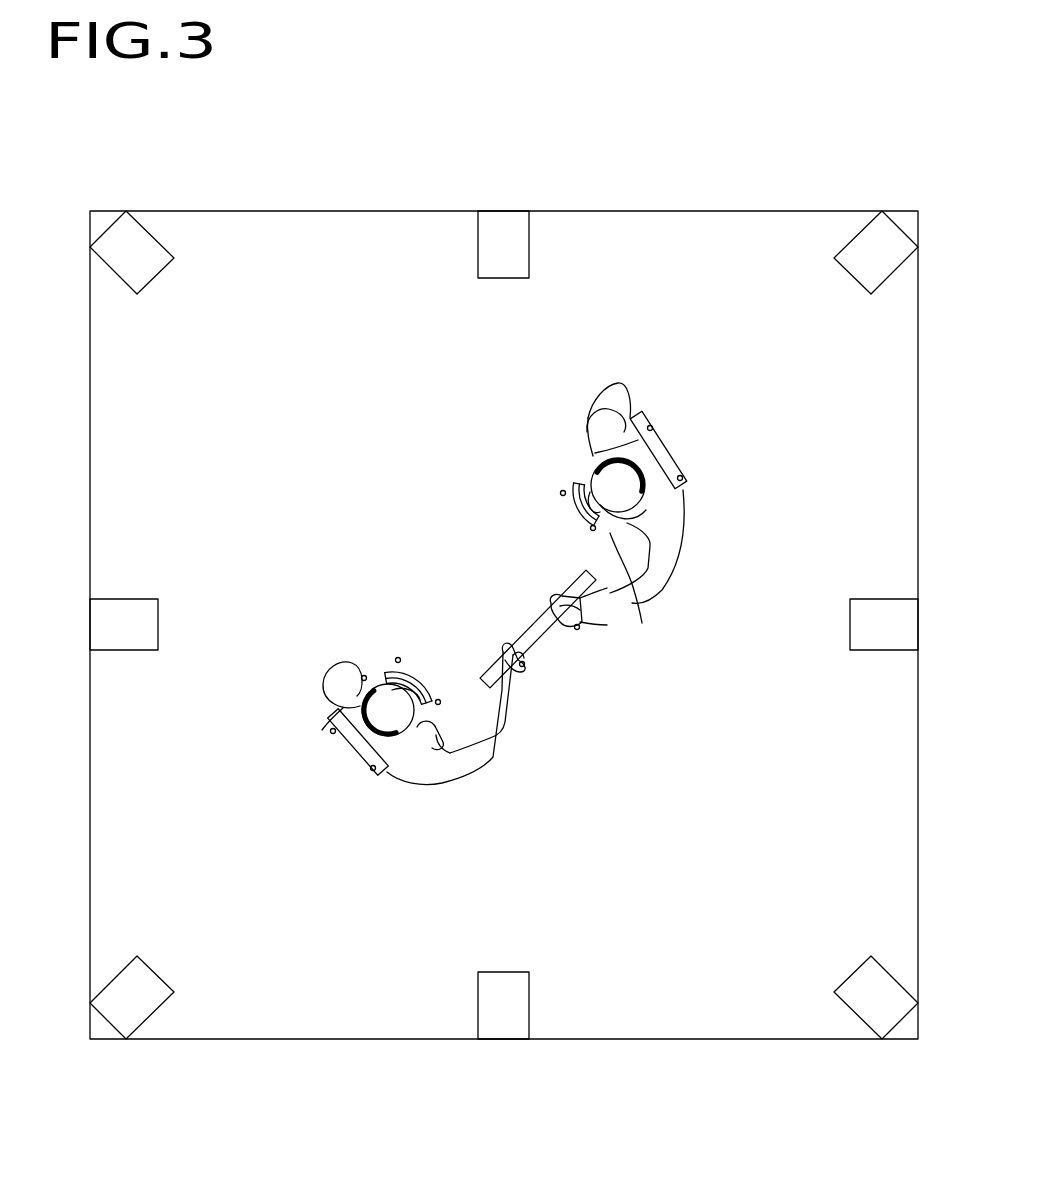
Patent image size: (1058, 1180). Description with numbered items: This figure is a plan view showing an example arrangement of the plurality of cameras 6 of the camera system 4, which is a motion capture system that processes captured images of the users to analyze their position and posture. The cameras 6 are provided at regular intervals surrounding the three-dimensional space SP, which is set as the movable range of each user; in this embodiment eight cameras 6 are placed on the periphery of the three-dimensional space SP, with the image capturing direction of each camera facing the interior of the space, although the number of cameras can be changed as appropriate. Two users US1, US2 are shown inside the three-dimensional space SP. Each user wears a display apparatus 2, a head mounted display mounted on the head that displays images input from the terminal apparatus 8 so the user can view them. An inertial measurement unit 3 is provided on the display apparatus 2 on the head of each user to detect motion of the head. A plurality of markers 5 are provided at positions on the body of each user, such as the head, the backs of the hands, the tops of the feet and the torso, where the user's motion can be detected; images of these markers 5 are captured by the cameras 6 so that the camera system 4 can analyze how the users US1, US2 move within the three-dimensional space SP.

The camera system 4 is at (886, 155).
The three-dimensional space SP is at (321, 249).
The cameras 6 is at (142, 253).
The user US1 is at (325, 670).
The user US2 is at (684, 520).
The display apparatus 2 is at (415, 678).
The inertial measurement unit 3 is at (427, 688).
The markers 5 is at (398, 660).
The terminal apparatus 8 is at (356, 748).